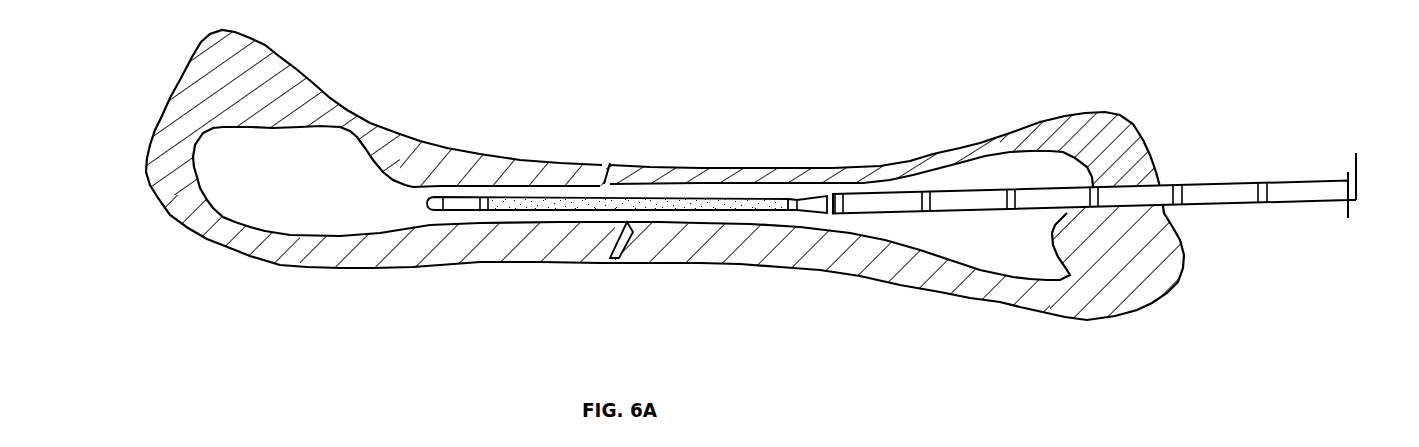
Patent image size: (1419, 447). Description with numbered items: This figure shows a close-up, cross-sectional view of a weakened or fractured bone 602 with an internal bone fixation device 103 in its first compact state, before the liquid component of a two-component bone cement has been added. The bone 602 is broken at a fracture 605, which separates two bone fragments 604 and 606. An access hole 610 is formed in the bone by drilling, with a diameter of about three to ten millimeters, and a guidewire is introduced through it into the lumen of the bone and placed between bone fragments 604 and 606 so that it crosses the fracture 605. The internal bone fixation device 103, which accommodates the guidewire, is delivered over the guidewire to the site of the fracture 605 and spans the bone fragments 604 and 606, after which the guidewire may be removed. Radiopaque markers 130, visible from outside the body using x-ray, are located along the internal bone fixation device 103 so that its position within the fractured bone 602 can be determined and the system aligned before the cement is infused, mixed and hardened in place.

The fractured bone 602 is at (290, 95).
The bone fragment 604 is at (313, 200).
The fracture 605 is at (608, 263).
The bone fragment 606 is at (987, 235).
The internal bone fixation device 103 is at (633, 202).
The radiopaque marker 130 is at (922, 197).
The access hole 610 is at (1160, 180).